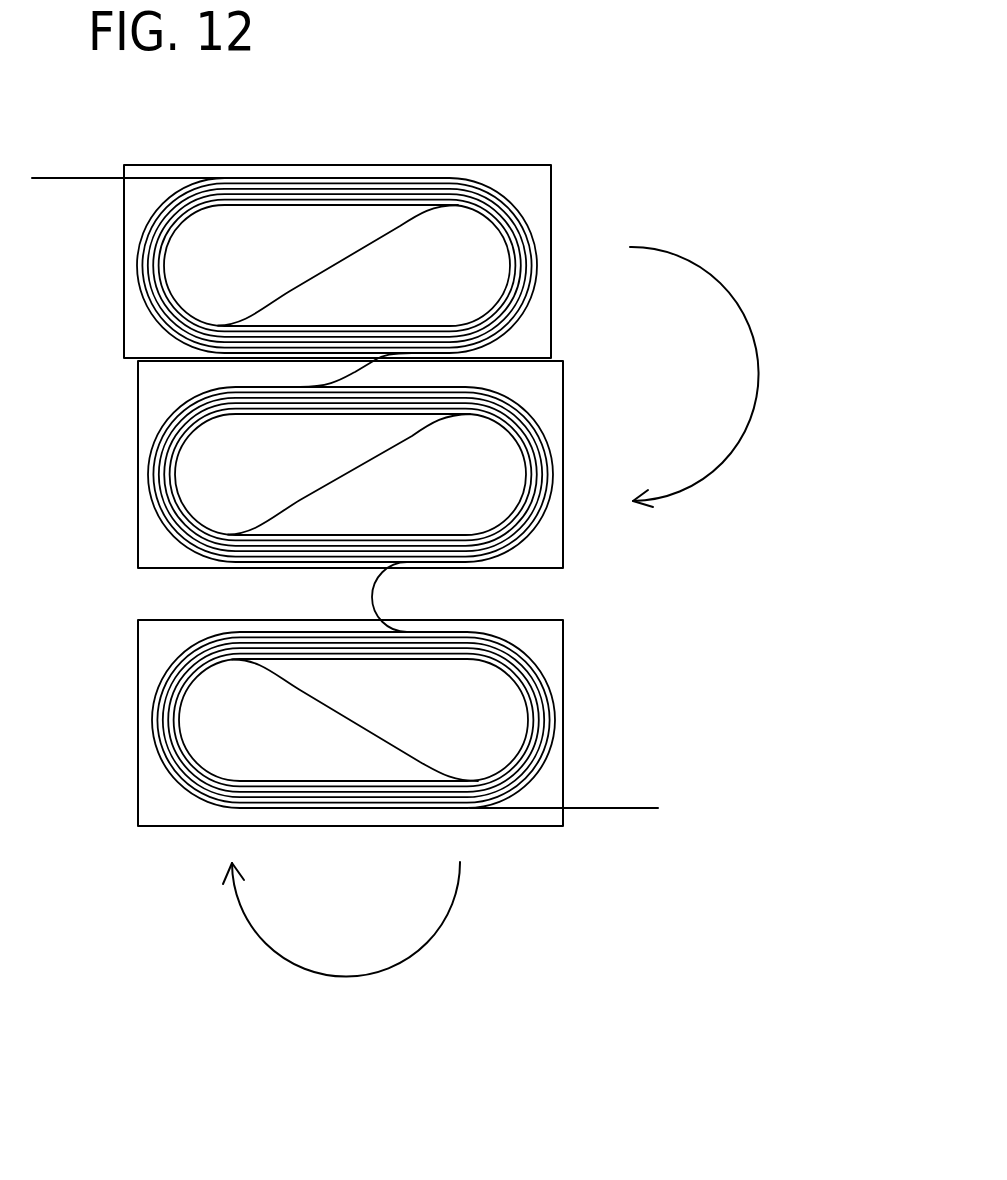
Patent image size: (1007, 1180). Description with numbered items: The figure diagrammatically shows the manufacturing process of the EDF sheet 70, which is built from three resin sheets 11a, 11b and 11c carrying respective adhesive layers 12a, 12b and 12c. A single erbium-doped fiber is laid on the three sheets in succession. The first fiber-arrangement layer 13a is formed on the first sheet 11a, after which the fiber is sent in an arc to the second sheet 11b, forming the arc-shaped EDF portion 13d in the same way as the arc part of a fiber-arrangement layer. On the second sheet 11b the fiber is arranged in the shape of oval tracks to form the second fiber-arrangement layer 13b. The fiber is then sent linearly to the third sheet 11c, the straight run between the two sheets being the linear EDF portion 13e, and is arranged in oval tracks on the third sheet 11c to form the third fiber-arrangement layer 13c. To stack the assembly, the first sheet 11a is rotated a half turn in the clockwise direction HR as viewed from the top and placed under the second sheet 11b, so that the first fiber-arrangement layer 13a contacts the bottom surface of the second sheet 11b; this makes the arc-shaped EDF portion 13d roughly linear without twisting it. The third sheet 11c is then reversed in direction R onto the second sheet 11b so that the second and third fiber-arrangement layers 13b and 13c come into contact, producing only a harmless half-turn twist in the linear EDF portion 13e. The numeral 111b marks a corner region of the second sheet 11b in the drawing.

The EDF sheet 70 is at (744, 109).
The first sheet 11a is at (565, 778).
The second sheet 11b is at (563, 440).
The third sheet 11c is at (551, 188).
The adhesive layer 12a is at (553, 662).
The adhesive layer 12b is at (548, 548).
The adhesive layer 12c is at (528, 178).
The first fiber-arrangement layer 13a is at (530, 810).
The second fiber-arrangement layer 13b is at (160, 440).
The third fiber-arrangement layer 13c is at (347, 176).
The arc-shaped EDF portion 13d is at (372, 601).
The linear EDF portion 13e is at (378, 358).
The bobbin corner portion of second coil 111b is at (152, 572).
The direction R is at (757, 345).
The clockwise direction HR is at (360, 990).